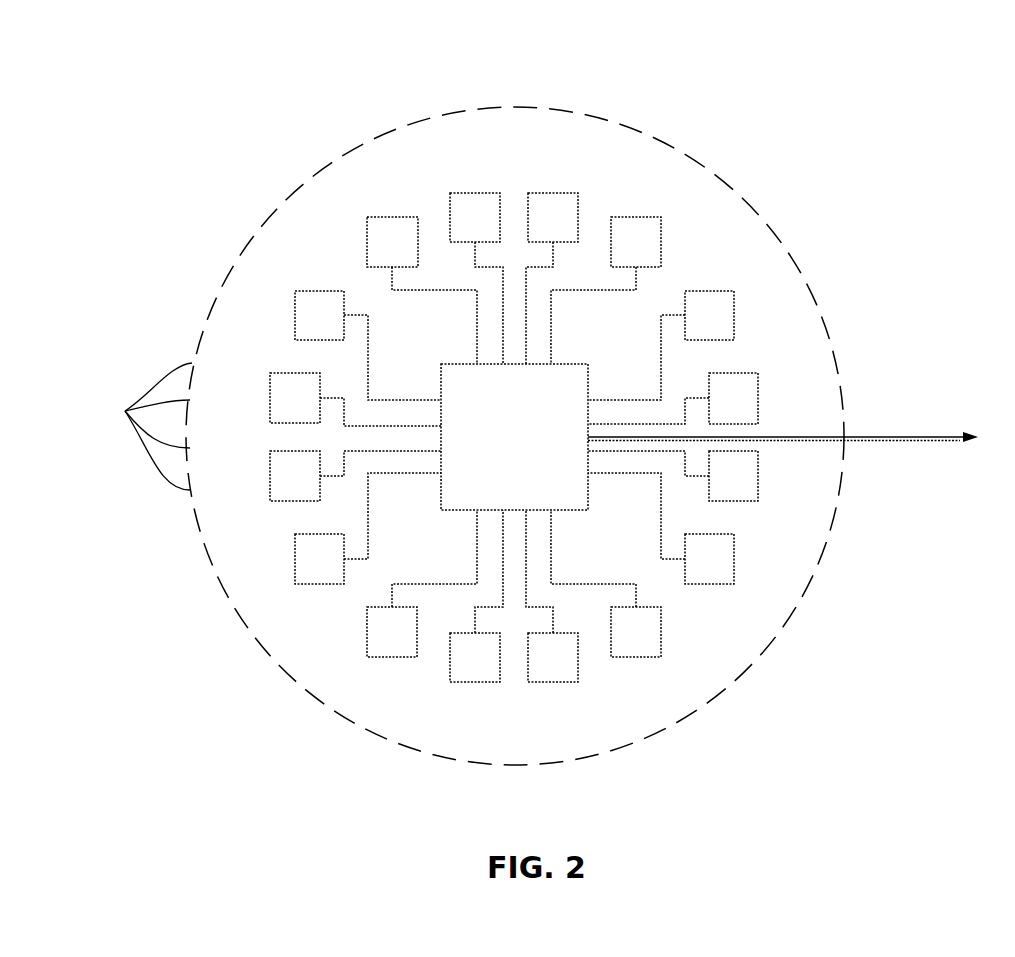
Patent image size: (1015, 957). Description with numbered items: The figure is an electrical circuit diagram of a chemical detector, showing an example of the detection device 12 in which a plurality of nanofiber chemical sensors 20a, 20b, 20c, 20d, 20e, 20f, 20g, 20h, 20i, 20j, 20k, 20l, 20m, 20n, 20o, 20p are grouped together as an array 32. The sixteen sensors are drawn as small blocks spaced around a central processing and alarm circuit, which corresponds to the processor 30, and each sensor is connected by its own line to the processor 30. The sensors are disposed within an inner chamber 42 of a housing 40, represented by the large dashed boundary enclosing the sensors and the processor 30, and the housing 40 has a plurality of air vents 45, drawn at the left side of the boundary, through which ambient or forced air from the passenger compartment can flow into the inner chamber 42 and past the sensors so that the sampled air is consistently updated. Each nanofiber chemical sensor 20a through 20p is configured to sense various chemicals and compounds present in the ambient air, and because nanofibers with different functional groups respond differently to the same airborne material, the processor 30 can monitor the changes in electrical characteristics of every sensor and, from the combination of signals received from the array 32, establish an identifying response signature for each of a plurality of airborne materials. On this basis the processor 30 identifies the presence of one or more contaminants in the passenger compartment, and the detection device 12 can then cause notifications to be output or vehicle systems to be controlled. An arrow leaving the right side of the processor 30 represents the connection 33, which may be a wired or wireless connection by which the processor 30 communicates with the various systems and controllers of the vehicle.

The detection device 12 is at (503, 404).
The array 32 is at (530, 436).
The housing 40 is at (530, 436).
The inner chamber 42 is at (618, 339).
The processor 30 is at (460, 366).
The connection 33 is at (948, 433).
The air vents 45 is at (143, 426).
The nanofiber chemical sensor 20a is at (553, 207).
The nanofiber chemical sensor 20b is at (640, 232).
The nanofiber chemical sensor 20c is at (718, 305).
The nanofiber chemical sensor 20d is at (744, 392).
The nanofiber chemical sensor 20e is at (752, 497).
The nanofiber chemical sensor 20f is at (713, 563).
The nanofiber chemical sensor 20g is at (647, 638).
The nanofiber chemical sensor 20h is at (557, 668).
The nanofiber chemical sensor 20i is at (475, 667).
The nanofiber chemical sensor 20j is at (388, 647).
The nanofiber chemical sensor 20k is at (309, 573).
The nanofiber chemical sensor 20l is at (286, 487).
The nanofiber chemical sensor 20m is at (286, 406).
The nanofiber chemical sensor 20n is at (304, 315).
The nanofiber chemical sensor 20o is at (383, 232).
The nanofiber chemical sensor 20p is at (458, 202).